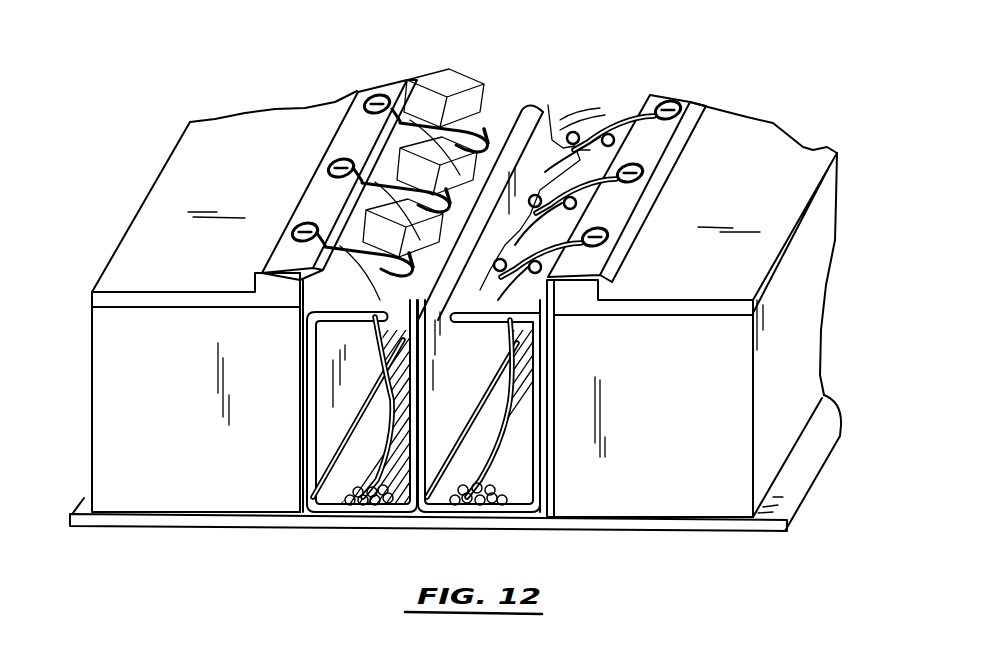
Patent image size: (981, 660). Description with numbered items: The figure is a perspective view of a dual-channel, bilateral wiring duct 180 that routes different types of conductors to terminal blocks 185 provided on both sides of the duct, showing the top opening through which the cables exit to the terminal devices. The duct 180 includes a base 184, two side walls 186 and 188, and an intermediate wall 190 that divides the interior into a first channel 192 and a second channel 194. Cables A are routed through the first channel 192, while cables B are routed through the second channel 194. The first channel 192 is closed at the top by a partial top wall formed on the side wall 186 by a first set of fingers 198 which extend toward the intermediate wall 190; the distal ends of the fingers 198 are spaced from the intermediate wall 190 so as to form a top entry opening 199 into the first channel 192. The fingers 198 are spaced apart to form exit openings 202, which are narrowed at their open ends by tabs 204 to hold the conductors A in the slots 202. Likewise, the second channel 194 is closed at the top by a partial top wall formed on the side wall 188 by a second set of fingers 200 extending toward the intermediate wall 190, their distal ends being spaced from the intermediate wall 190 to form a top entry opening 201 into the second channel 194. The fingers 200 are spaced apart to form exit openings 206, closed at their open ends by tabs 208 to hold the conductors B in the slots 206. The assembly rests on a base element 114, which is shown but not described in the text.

The base plate 114 is at (650, 526).
The dual-channel, bilateral wiring duct 180 is at (572, 104).
The base 184 is at (390, 508).
The terminal blocks 185 is at (258, 74).
The side wall 186 is at (300, 452).
The side wall 188 is at (545, 460).
The intermediate wall 190 is at (536, 92).
The first channel 192 is at (352, 380).
The second channel 194 is at (475, 368).
The first set of fingers 198 is at (483, 100).
The top entry opening 199 is at (521, 108).
The second set of fingers 200 is at (603, 102).
The top entry opening 201 is at (598, 100).
The exit openings 202 is at (400, 124).
The tabs 204 is at (478, 122).
The exit openings 206 is at (400, 273).
The tabs 208 is at (473, 288).
The cables A is at (370, 337).
The cables B is at (505, 333).